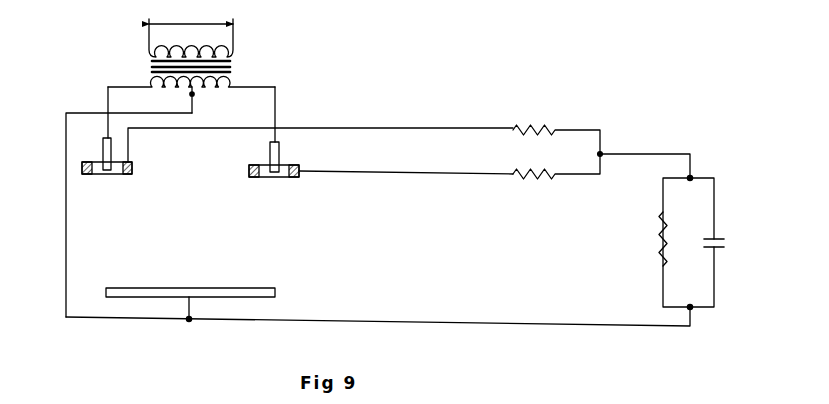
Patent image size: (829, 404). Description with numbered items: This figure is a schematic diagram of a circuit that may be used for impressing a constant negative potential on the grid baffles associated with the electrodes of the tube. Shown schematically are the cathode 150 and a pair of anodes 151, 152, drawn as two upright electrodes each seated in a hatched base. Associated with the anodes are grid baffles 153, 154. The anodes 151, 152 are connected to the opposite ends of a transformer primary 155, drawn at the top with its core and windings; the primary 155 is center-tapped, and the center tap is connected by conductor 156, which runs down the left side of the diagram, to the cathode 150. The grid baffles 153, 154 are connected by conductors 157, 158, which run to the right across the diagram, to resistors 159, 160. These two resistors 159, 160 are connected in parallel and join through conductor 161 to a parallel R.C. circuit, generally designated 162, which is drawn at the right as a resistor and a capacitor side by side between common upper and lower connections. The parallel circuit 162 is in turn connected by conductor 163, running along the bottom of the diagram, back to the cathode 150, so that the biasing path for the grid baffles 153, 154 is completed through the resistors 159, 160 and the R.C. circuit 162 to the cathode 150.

The cathode 150 is at (188, 290).
The anode 151 is at (103, 148).
The anode 152 is at (270, 154).
The grid baffle 153 is at (129, 174).
The grid baffle 154 is at (298, 166).
The transformer primary 155 is at (232, 80).
The conductor 156 is at (66, 272).
The conductor 157 is at (386, 130).
The conductor 158 is at (396, 174).
The resistor 159 is at (530, 128).
The resistor 160 is at (540, 179).
The conductor 161 is at (691, 165).
The parallel R.C. circuit 162 is at (719, 183).
The conductor 163 is at (436, 320).